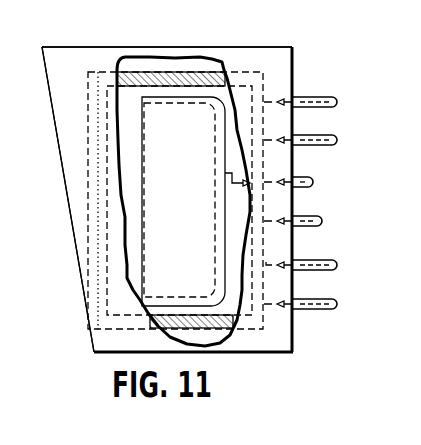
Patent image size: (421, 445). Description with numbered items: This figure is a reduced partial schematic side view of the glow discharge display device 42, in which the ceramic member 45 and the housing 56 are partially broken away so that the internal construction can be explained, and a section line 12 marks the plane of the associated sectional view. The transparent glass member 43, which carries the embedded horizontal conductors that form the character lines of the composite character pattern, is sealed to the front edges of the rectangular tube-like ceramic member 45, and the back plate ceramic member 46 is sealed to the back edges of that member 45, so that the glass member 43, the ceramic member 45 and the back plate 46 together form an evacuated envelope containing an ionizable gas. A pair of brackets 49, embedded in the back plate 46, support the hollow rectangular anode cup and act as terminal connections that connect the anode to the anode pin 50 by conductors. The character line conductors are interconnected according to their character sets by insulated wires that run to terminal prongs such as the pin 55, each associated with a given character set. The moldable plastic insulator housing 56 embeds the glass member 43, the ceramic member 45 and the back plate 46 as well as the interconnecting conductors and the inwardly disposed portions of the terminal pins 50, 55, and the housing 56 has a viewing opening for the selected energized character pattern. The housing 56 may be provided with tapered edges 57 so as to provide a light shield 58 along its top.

The section line 12 is at (55, 200).
The display device 42 is at (73, 283).
The glass member 43 is at (88, 97).
The rectangular tube-like ceramic member 45 is at (149, 72).
The back plate ceramic member 46 is at (253, 72).
The brackets 49 is at (232, 188).
The anode pin 50 is at (313, 178).
The pin 55 is at (327, 97).
The plastic insulator housing 56 is at (168, 45).
The tapered edges 57 is at (78, 251).
The light shield 58 is at (53, 45).